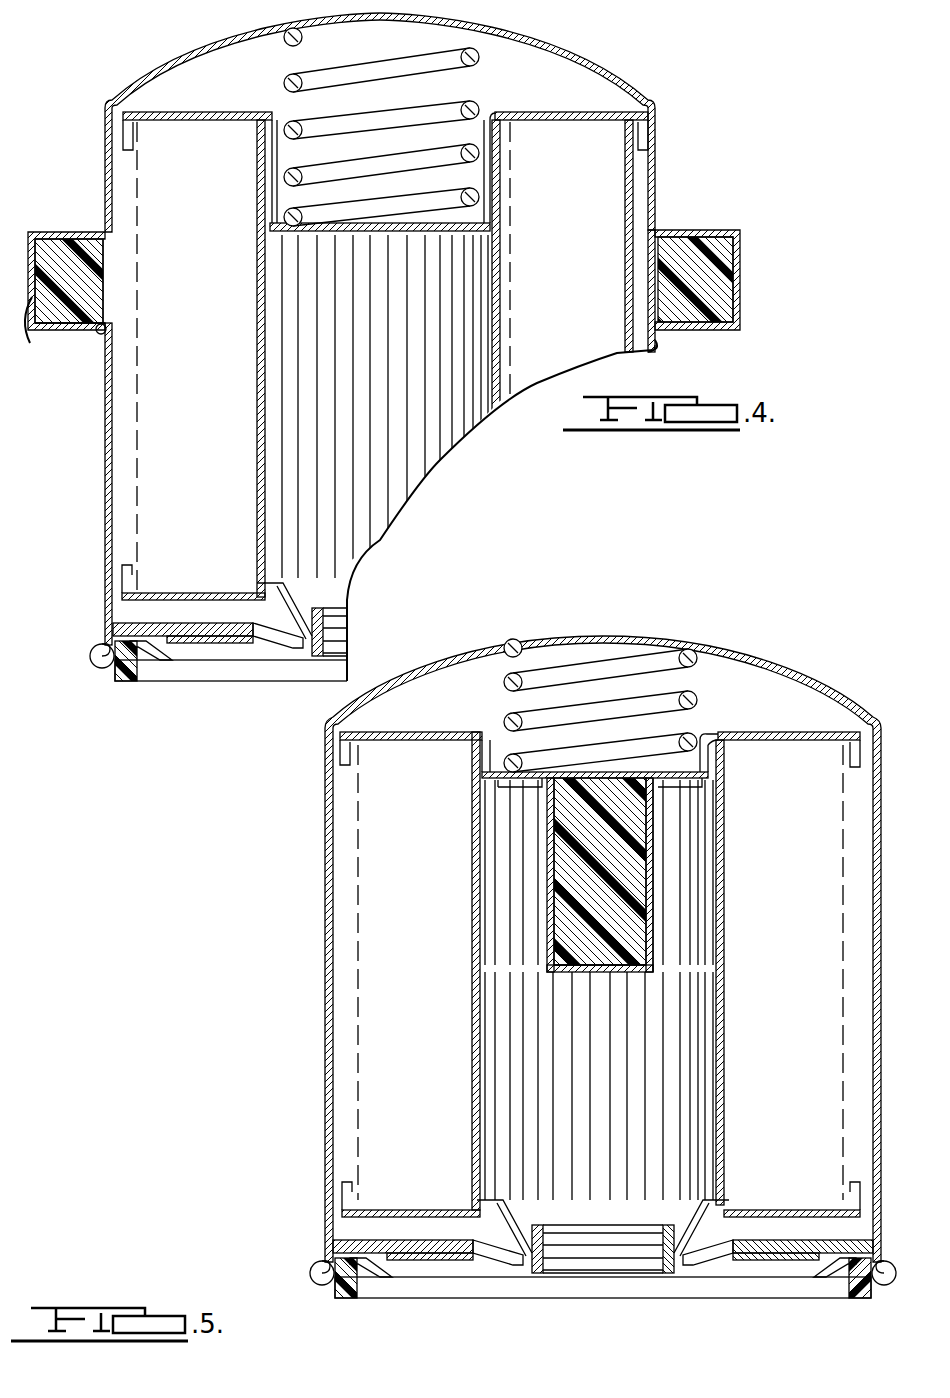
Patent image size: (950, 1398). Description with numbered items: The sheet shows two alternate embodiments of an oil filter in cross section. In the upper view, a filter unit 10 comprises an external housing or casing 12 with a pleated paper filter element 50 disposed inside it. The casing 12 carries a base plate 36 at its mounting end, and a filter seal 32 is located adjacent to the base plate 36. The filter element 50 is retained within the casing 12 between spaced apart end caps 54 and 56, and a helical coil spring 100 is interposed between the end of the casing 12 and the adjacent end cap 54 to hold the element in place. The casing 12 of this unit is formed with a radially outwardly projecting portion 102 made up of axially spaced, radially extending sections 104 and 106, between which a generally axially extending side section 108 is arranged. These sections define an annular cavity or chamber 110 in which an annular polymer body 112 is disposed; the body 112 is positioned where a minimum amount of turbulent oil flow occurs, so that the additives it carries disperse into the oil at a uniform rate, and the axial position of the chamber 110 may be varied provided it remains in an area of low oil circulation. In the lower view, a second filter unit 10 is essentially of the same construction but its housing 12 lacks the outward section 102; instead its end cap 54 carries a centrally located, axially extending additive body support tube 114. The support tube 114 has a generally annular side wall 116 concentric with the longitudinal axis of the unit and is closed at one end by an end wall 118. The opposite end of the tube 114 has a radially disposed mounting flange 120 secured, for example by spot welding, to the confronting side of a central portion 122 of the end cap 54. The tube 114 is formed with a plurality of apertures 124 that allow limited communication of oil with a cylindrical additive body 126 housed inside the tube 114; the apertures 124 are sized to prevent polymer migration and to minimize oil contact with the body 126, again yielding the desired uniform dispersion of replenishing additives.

In FIG. 4, the filter unit 10 is at (697, 150).
In FIG. 5, the filter unit 10 is at (291, 876).
In FIG. 4, the external housing or casing 12 is at (664, 104).
In FIG. 5, the external housing or casing 12 is at (322, 958).
In FIG. 4, the filter seal 32 is at (137, 682).
In FIG. 5, the filter seal 32 is at (856, 1298).
In FIG. 4, the base plate 36 is at (313, 657).
In FIG. 5, the base plate 36 is at (521, 1273).
In FIG. 4, the pleated paper filter element 50 is at (267, 340).
In FIG. 5, the pleated paper filter element 50 is at (485, 1036).
In FIG. 4, the end cap 54 is at (385, 234).
In FIG. 5, the end cap 54 is at (771, 727).
In FIG. 4, the end cap 56 is at (166, 599).
In FIG. 4, the helical coil spring 100 is at (299, 74).
In FIG. 4, the radially outwardly projecting portion 102 is at (85, 335).
In FIG. 4, the radially extending section 104 is at (72, 233).
In FIG. 4, the radially extending section 106 is at (108, 330).
In FIG. 4, the axially extending side section 108 is at (36, 331).
In FIG. 4, the annular cavity or chamber 110 is at (50, 232).
In FIG. 4, the annular polymer body 112 is at (112, 278).
In FIG. 5, the additive body support tube 114 is at (641, 976).
In FIG. 5, the annular side wall 116 is at (656, 906).
In FIG. 5, the end wall 118 is at (625, 973).
In FIG. 5, the mounting flange 120 is at (682, 787).
In FIG. 5, the central portion 122 is at (707, 745).
In FIG. 5, the apertures 124 is at (656, 878).
In FIG. 5, the cylindrical additive body 126 is at (625, 870).